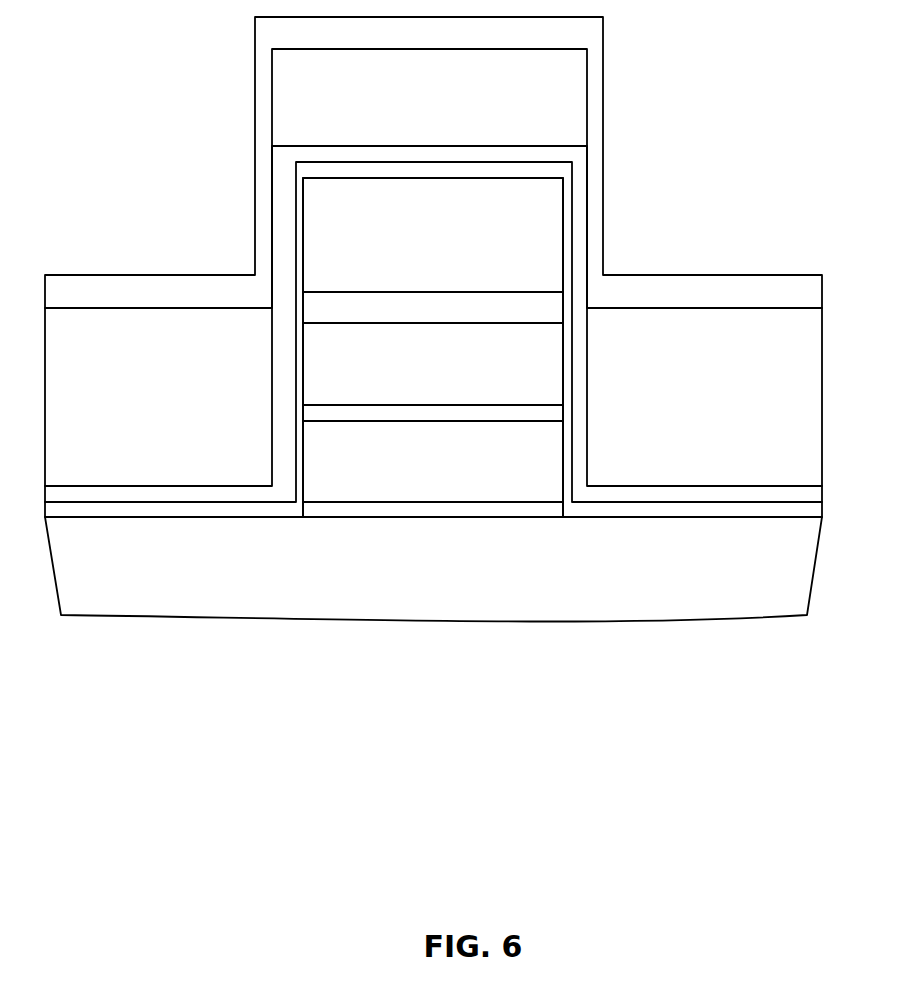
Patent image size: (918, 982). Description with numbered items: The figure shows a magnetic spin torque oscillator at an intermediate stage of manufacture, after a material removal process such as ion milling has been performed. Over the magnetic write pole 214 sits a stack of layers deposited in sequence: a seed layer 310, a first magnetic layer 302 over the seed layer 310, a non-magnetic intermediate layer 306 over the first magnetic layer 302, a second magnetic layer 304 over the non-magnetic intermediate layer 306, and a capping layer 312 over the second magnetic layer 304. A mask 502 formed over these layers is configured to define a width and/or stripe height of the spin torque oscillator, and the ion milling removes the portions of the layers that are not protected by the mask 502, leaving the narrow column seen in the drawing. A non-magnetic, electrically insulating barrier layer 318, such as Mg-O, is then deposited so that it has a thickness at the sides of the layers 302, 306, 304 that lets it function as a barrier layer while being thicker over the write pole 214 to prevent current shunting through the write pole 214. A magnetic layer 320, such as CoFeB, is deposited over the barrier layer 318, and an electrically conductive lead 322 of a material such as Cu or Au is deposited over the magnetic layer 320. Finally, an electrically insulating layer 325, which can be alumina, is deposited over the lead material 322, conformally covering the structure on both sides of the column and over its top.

The magnetic write pole 214 is at (467, 565).
The first magnetic layer 302 is at (470, 455).
The second magnetic layer 304 is at (472, 363).
The non-magnetic intermediate layer 306 is at (462, 413).
The seed layer 310 is at (475, 510).
The capping layer 312 is at (474, 308).
The barrier layer 318 is at (687, 507).
The magnetic layer 320 is at (687, 495).
The electrically conductive lead 322 is at (458, 98).
The electrically insulating layer 325 is at (175, 292).
The mask 502 is at (470, 232).